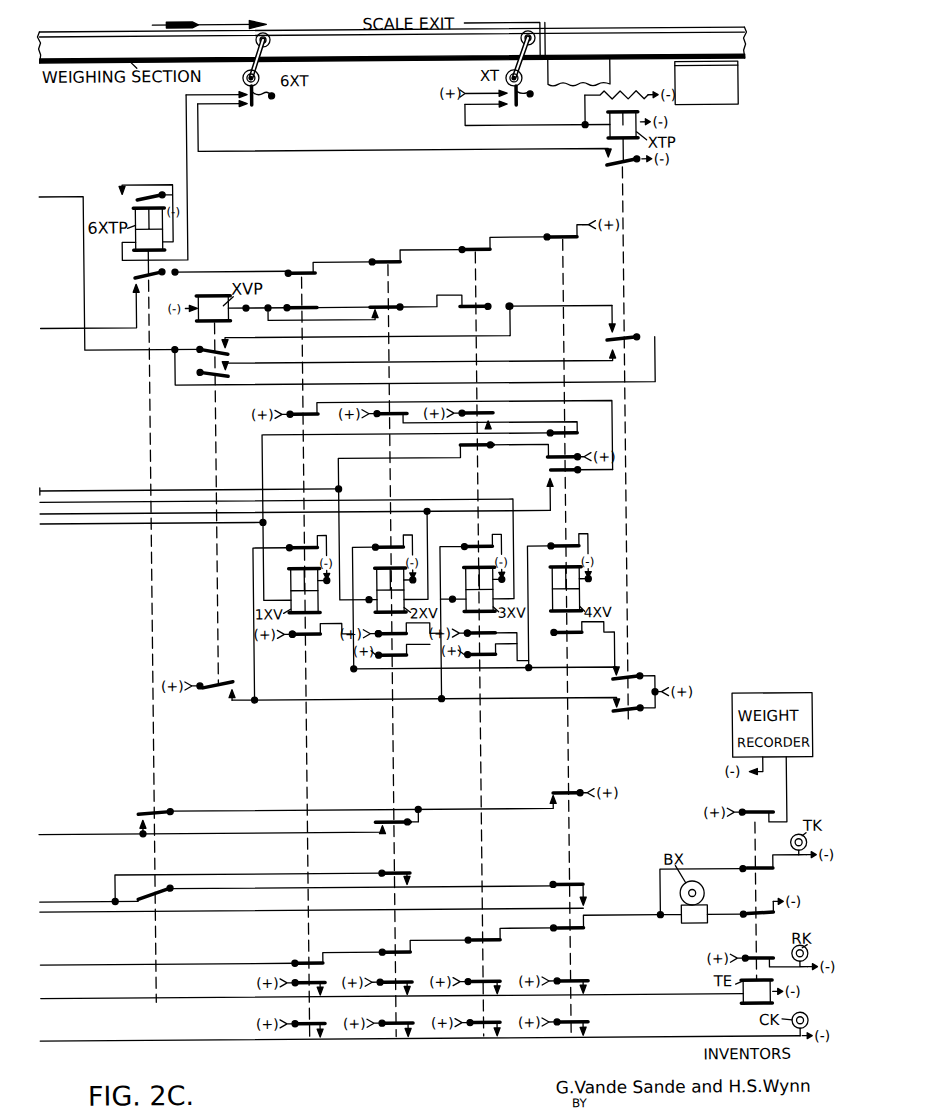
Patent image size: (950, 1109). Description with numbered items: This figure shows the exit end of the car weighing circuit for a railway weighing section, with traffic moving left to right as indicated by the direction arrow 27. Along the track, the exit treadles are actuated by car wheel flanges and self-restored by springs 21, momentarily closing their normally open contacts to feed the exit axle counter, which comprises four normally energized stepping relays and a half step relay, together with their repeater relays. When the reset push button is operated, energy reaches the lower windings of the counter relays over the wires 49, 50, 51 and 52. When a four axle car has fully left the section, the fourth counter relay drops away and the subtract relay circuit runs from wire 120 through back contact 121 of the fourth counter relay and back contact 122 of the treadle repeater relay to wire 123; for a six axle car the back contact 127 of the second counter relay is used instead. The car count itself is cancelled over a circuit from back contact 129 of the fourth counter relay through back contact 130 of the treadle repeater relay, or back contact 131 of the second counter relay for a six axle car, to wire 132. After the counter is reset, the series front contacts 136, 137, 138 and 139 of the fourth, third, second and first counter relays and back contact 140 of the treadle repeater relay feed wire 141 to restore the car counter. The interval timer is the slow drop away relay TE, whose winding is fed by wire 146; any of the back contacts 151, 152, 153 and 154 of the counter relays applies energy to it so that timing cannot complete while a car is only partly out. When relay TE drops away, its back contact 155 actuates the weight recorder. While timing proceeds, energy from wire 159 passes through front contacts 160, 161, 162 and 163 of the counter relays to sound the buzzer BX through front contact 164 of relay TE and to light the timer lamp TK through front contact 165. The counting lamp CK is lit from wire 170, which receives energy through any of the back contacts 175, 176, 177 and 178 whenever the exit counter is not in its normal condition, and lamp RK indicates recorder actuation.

The direction arrow 27 is at (198, 26).
The spring 21 is at (401, 105).
The front contact of relay 4XV 136 is at (554, 236).
The front contact of relay 3XV 137 is at (469, 248).
The front contact of relay 2XV 138 is at (378, 259).
The front contact of relay 1XV 139 is at (296, 270).
The back contact of relay 6XTP 140 is at (158, 286).
The wire 141 is at (89, 306).
The wire 50 is at (62, 488).
The wire 51 is at (84, 499).
The wire 49 is at (61, 522).
The wire 52 is at (113, 512).
The back contact of relay 6XTP 130 is at (144, 811).
The wire 132 is at (212, 826).
The back contact of relay 2XV 131 is at (372, 822).
The back contact of relay 4XV 129 is at (553, 794).
The wire 123 is at (89, 893).
The back contact of relay 6XTP 122 is at (154, 891).
The back contact of relay 4XV 121 is at (556, 883).
The wire 120 is at (312, 921).
The back contact of relay 2XV 127 is at (392, 872).
The wire 159 is at (167, 956).
The front contact of relay 1XV 160 is at (296, 961).
The front contact of relay 2XV 161 is at (386, 950).
The front contact of relay 3XV 162 is at (476, 940).
The front contact of relay 4XV 163 is at (563, 930).
The front contact of relay TE 165 is at (741, 867).
The front contact of relay TE 164 is at (744, 912).
The back contact of relay TE 155 is at (752, 805).
The wire 146 is at (392, 986).
The wire 170 is at (420, 1029).
The back contact of relay 1XV 151 is at (317, 980).
The back contact of relay 2XV 152 is at (393, 980).
The back contact of relay 3XV 153 is at (479, 980).
The back contact of relay 4XV 154 is at (567, 980).
The back contact of relay 1XV 175 is at (308, 1028).
The back contact of relay 2XV 176 is at (395, 1028).
The back contact of relay 3XV 177 is at (483, 1028).
The back contact of relay 4XV 178 is at (567, 1028).